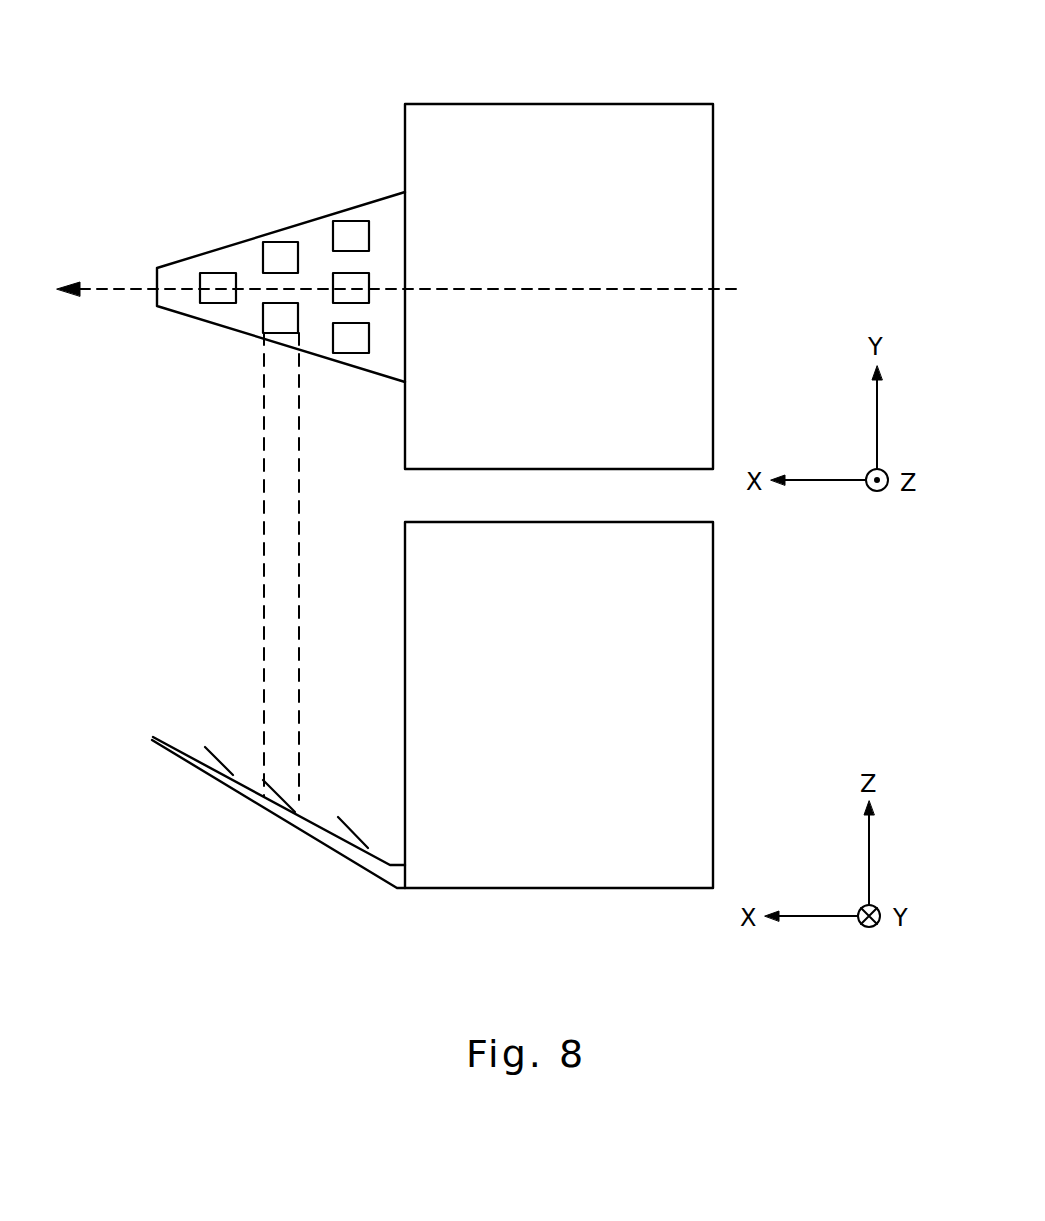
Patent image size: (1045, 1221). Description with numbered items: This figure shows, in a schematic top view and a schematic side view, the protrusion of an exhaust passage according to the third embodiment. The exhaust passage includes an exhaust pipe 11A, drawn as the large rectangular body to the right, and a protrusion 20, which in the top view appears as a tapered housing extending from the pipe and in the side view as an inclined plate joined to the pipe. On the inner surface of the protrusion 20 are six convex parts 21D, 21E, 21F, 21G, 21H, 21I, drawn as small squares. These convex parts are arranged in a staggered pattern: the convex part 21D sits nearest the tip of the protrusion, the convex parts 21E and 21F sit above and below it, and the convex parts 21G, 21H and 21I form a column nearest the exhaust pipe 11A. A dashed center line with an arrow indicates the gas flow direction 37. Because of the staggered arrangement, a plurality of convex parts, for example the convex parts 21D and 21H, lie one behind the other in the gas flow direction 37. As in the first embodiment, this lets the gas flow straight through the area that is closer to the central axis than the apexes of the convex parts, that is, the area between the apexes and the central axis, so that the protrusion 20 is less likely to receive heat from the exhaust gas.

The light source unit housing 11A is at (652, 162).
The gas flow direction 37 is at (720, 285).
The convex part 21D is at (211, 273).
The convex part 21E is at (285, 242).
The convex part 21F is at (263, 318).
The convex part 21G is at (350, 221).
The convex part 21H is at (345, 293).
The convex part 21I is at (353, 350).
The protrusion 20 is at (370, 865).